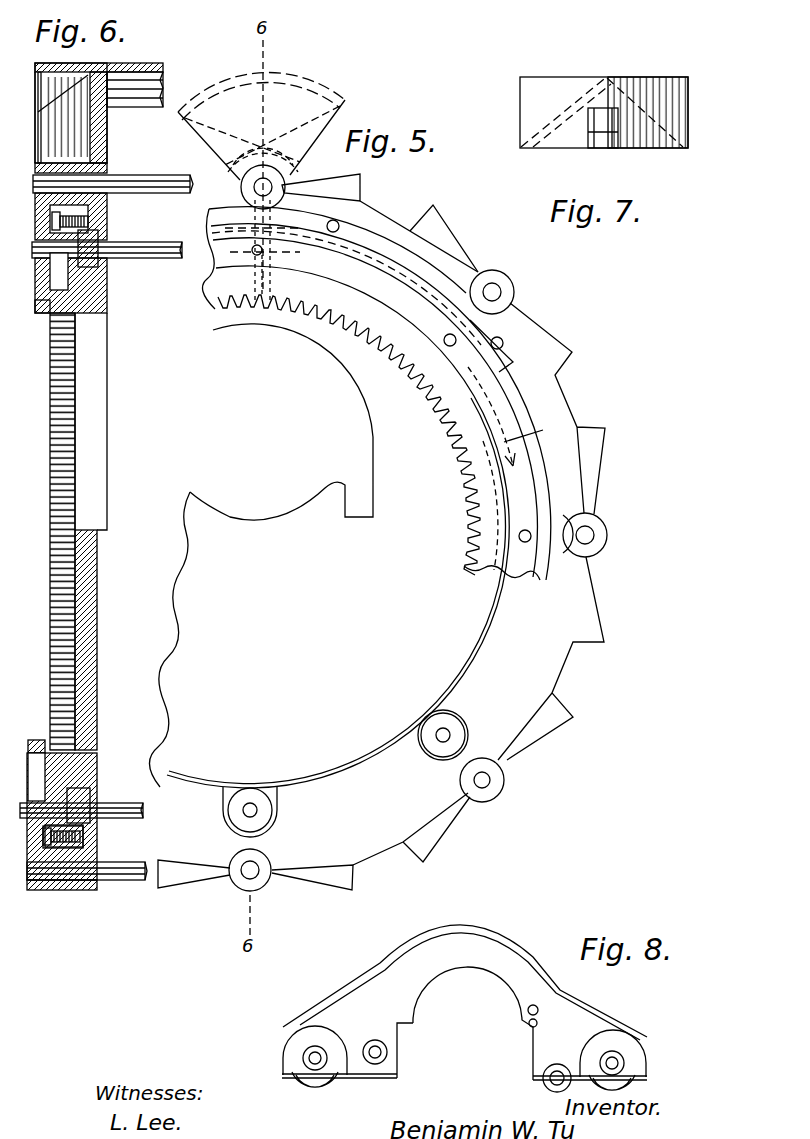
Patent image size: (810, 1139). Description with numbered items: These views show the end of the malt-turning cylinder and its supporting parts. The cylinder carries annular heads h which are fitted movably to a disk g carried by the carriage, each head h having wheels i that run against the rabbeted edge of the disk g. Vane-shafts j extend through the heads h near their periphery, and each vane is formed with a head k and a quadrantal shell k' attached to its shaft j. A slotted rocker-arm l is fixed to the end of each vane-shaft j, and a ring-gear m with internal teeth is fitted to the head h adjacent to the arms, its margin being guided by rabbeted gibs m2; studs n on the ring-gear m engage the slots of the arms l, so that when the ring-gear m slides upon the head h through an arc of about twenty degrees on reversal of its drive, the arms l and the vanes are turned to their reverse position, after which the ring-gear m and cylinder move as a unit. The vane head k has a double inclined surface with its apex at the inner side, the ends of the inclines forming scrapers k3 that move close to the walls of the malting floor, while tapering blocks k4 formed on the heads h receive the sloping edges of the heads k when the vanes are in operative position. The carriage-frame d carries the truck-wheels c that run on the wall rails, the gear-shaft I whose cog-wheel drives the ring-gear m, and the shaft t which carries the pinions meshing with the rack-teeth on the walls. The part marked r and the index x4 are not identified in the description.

In FIG. 6, the vane head k is at (99, 118).
In FIG. 5, the vane head k is at (261, 126).
In FIG. 7, the vane head k is at (604, 98).
In FIG. 6, the quadrantal shell k' is at (151, 78).
In FIG. 6, the scraper k3 is at (48, 145).
In FIG. 7, the scraper k3 is at (718, 140).
In FIG. 5, the tapering block k4 is at (602, 456).
In FIG. 6, the vane-shaft j is at (175, 180).
In FIG. 5, the vane-shaft j is at (275, 187).
In FIG. 6, the annular head h is at (105, 212).
In FIG. 5, the annular head h is at (320, 780).
In FIG. 6, the stud n is at (40, 245).
In FIG. 5, the stud n is at (252, 252).
In FIG. 6, the roller shaft r is at (158, 245).
In FIG. 5, the roller shaft r is at (441, 740).
In FIG. 6, the wheel i is at (98, 270).
In FIG. 5, the wheel i is at (552, 520).
In FIG. 6, the slotted rocker-arm l is at (35, 310).
In FIG. 5, the slotted rocker-arm l is at (268, 252).
In FIG. 7, the slotted rocker-arm l is at (602, 136).
In FIG. 6, the disk g is at (100, 320).
In FIG. 5, the disk g is at (336, 360).
In FIG. 6, the ring-gear m is at (70, 292).
In FIG. 5, the ring-gear m is at (226, 290).
In FIG. 6, the rabbeted gib m2 is at (46, 832).
In FIG. 5, the rabbeted gib m2 is at (413, 285).
In FIG. 5, the direction of movement x4 is at (514, 416).
In FIG. 8, the carriage-frame d is at (485, 935).
In FIG. 8, the truck-wheel c is at (318, 1084).
In FIG. 8, the gear-shaft I is at (375, 1046).
In FIG. 8, the shaft t is at (560, 1075).